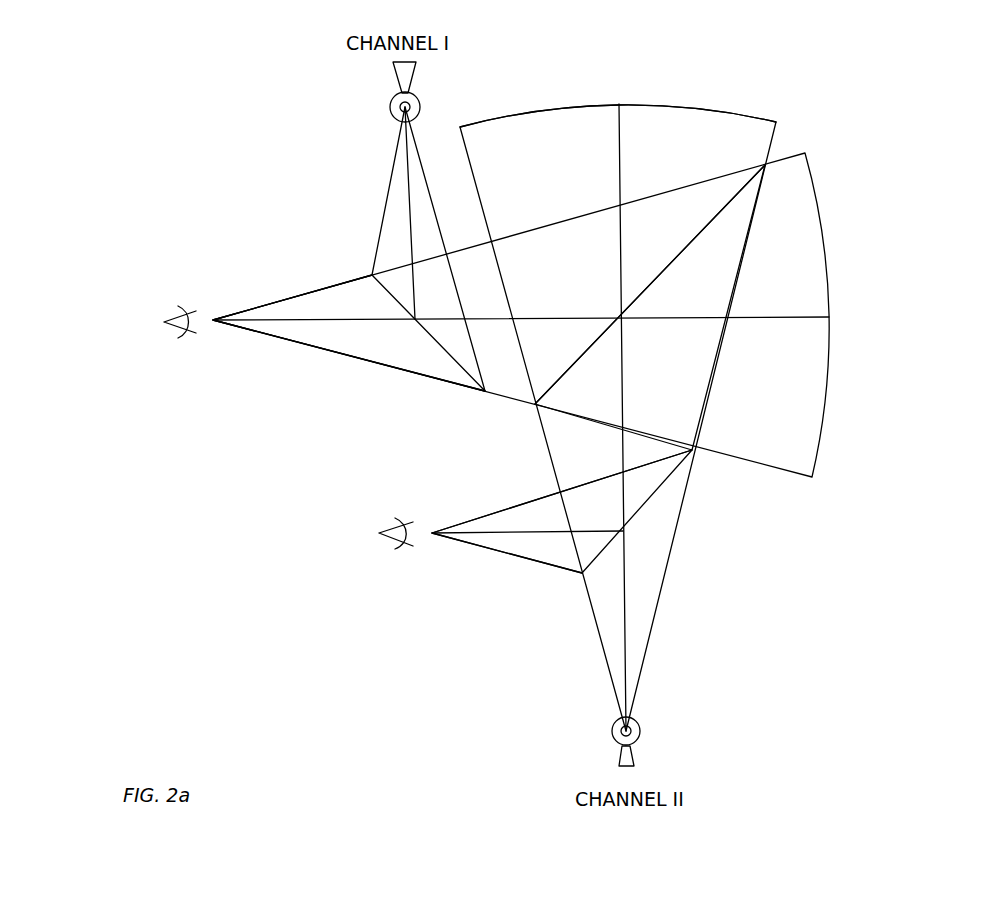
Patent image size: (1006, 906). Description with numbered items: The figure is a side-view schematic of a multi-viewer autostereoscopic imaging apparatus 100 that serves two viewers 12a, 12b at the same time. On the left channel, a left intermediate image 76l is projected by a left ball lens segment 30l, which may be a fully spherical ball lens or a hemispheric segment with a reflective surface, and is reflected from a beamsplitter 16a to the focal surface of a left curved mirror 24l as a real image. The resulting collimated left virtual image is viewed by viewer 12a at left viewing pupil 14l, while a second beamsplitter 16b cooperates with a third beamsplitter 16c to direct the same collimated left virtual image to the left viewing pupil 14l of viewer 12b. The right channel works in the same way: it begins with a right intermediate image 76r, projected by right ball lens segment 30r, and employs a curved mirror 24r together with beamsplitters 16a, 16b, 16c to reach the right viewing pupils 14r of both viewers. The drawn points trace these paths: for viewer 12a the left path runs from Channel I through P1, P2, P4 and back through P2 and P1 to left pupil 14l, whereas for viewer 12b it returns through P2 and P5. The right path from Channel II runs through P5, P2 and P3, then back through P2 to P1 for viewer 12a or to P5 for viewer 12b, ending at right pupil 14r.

The multi-viewer autostereoscopic imaging apparatus 100 is at (822, 613).
The viewer 12a is at (212, 274).
The viewer 12b is at (367, 561).
The left viewing pupil 14l is at (177, 318).
The right viewing pupil 14r is at (393, 530).
The beamsplitter 16a is at (443, 348).
The second beamsplitter 16b is at (677, 258).
The third beamsplitter 16c is at (660, 492).
The left curved mirror 24l is at (828, 246).
The curved mirror 24r is at (712, 106).
The left ball lens segment 30l is at (392, 110).
The right ball lens segment 30r is at (641, 730).
The left intermediate image 76l is at (400, 70).
The right intermediate image 76r is at (630, 755).
The point P1 is at (413, 321).
The point P2 is at (621, 320).
The point P3 is at (621, 107).
The point P4 is at (826, 319).
The point P5 is at (627, 529).